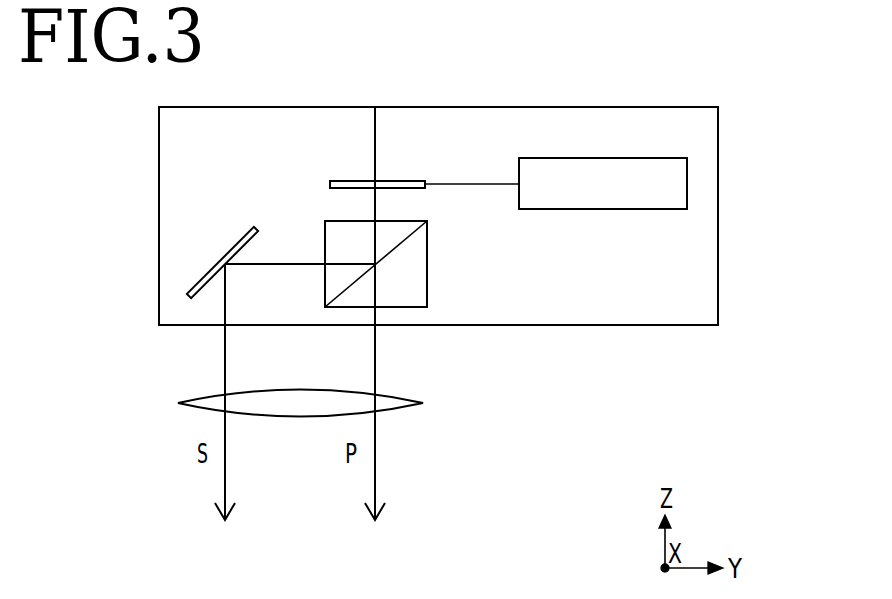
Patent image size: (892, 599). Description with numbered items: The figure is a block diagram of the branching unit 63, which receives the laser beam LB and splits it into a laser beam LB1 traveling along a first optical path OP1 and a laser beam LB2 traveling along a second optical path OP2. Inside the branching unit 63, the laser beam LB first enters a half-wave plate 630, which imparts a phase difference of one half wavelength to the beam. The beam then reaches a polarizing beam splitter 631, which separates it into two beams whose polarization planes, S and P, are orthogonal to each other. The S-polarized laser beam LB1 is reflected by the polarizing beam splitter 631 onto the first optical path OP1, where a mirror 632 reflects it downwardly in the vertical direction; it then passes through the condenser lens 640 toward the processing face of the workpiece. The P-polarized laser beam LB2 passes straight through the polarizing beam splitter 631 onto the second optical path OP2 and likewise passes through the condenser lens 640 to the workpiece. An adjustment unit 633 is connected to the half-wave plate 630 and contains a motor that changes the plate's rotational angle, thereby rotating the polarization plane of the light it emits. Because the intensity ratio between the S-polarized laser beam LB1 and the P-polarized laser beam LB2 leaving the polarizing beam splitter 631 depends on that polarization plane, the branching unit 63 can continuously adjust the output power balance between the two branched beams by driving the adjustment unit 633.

The branching unit 63 is at (718, 185).
The half-wave plate 630 is at (420, 178).
The polarizing beam splitter 631 is at (427, 263).
The mirror 632 is at (240, 235).
The adjustment unit 633 is at (593, 209).
The condenser lens 640 is at (424, 401).
The laser beam LB is at (376, 124).
The laser beam of S polarization LB1 is at (225, 487).
The laser beam of P polarization LB2 is at (375, 470).
The first optical path OP1 is at (225, 355).
The second optical path OP2 is at (375, 347).